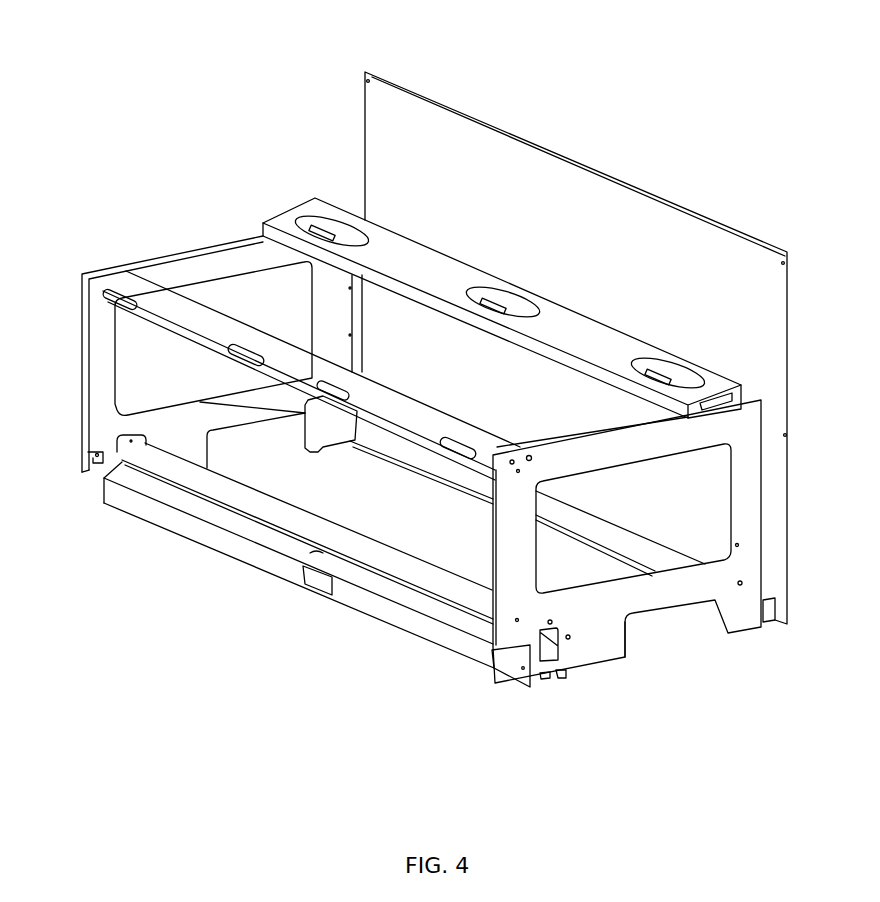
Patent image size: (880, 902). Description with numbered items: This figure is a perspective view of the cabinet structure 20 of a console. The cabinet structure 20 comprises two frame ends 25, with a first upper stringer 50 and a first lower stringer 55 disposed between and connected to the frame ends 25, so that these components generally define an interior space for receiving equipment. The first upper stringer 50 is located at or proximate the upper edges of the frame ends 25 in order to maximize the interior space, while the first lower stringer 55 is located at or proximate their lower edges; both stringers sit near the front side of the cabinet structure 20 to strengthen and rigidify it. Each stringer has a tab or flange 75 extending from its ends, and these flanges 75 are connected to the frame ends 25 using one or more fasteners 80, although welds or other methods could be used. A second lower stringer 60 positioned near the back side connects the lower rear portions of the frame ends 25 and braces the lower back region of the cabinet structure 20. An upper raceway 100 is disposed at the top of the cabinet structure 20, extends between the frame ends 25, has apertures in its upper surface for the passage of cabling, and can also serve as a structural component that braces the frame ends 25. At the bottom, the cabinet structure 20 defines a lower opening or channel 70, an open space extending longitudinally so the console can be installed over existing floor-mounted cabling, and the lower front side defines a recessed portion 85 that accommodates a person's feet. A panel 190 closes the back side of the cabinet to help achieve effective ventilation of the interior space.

The cabinet structure 20 is at (175, 187).
The frame ends 25 is at (82, 343).
The first upper stringer 50 is at (175, 320).
The first lower stringer 55 is at (120, 457).
The second lower stringer 60 is at (626, 537).
The channel 70 is at (657, 633).
The flange 75 is at (145, 435).
The fasteners 80 is at (533, 458).
The recessed portion 85 is at (514, 659).
The upper raceway 100 is at (424, 274).
The panel 190 is at (777, 298).